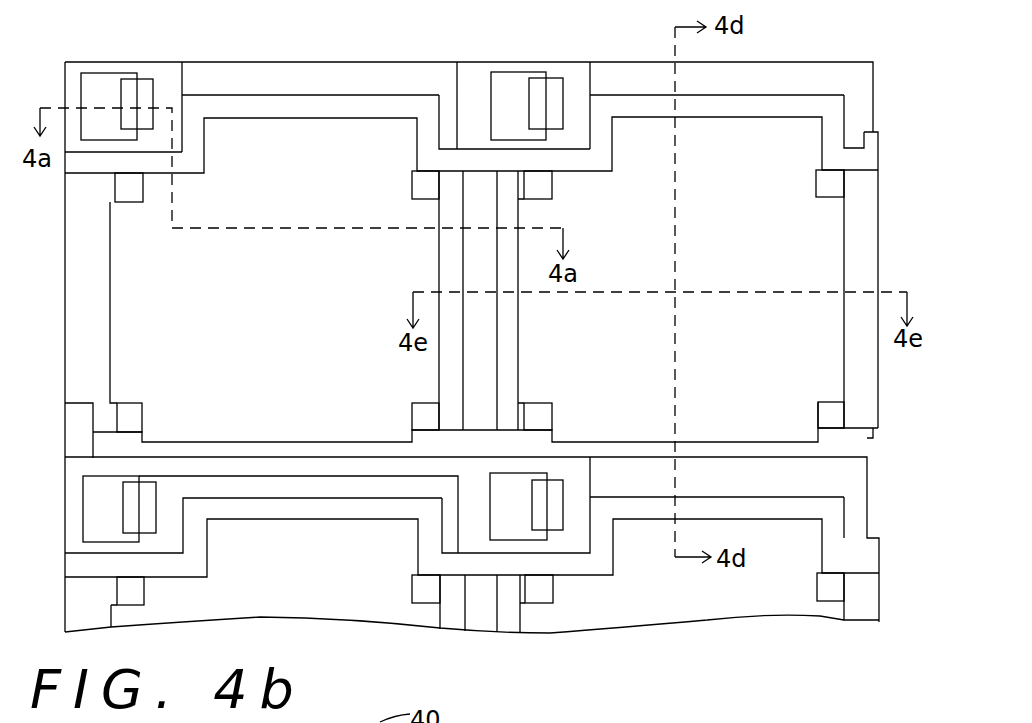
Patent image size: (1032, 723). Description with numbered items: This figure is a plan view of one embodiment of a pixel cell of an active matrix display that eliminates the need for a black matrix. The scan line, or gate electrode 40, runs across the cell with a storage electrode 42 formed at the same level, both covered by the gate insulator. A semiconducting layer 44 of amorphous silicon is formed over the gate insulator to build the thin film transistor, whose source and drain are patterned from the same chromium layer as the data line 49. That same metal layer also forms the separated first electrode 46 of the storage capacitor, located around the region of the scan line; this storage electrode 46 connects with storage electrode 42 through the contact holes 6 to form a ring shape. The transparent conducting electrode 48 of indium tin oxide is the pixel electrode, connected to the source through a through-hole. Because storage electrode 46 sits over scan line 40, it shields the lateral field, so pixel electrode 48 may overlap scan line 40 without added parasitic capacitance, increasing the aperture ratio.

The contact holes 6 is at (135, 190).
The gate electrode 40 is at (167, 80).
The storage electrode 42 is at (432, 77).
The semiconducting layer 44 is at (93, 80).
The first electrode of the storage capacitor 46 is at (262, 105).
The transparent conducting electrode 48 is at (337, 167).
The data line 49 is at (127, 78).